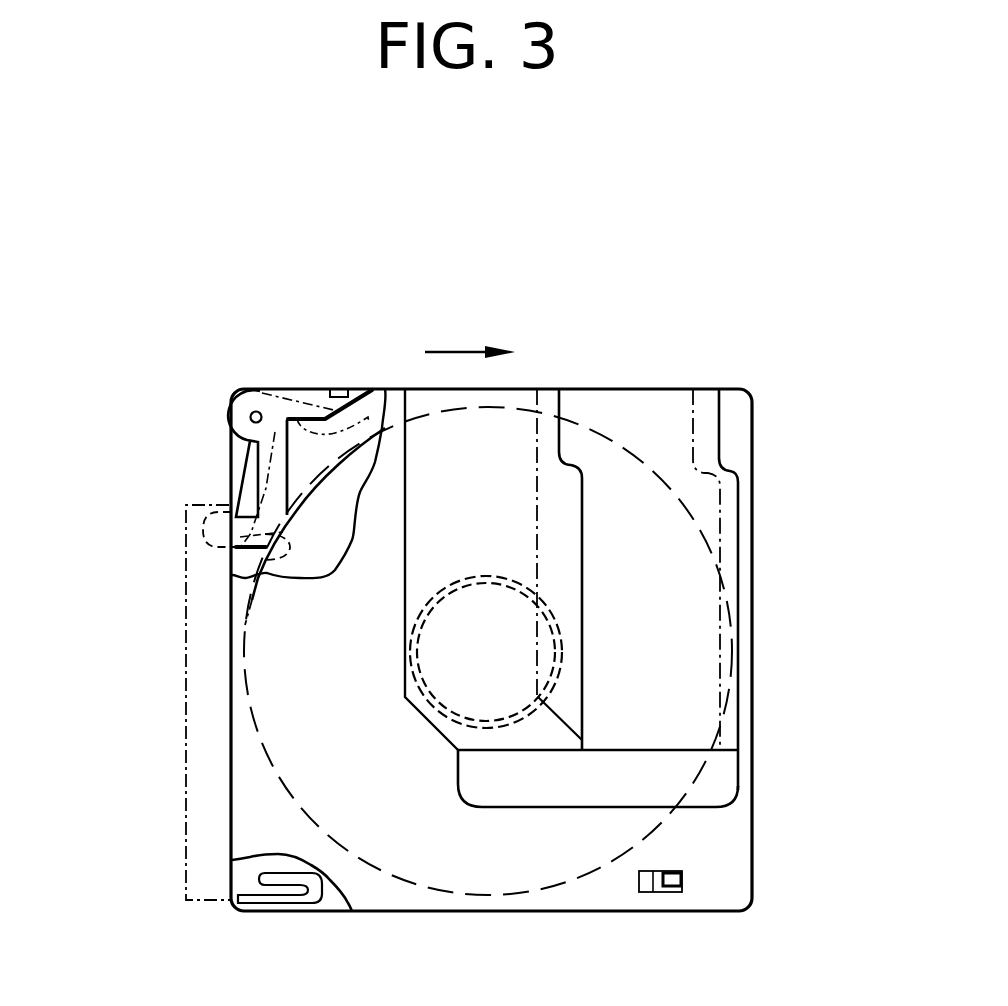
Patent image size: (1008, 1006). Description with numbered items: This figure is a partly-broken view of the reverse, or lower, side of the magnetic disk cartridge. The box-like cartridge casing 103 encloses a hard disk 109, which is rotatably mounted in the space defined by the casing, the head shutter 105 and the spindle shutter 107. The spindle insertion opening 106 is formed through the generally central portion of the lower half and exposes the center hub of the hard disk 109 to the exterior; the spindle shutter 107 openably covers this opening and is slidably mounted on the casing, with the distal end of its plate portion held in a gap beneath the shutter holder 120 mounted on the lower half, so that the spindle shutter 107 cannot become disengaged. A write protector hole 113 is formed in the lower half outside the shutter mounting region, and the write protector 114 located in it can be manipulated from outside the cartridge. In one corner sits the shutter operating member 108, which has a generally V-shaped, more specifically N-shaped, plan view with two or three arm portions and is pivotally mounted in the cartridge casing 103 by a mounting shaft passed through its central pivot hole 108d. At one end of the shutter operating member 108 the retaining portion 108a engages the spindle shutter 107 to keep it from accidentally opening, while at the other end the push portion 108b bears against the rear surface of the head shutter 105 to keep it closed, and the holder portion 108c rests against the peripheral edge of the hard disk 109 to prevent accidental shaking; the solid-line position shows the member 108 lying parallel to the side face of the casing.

The cartridge casing 103 is at (748, 407).
The head shutter 105 is at (193, 503).
The spindle insertion opening 106 is at (483, 728).
The spindle shutter 107 is at (525, 388).
The shutter operating member 108 is at (307, 388).
The retaining portion 108a is at (340, 389).
The push portion 108b is at (203, 525).
The holder portion 108c is at (265, 561).
The pivot hole 108d is at (254, 411).
The hard disk 109 is at (380, 877).
The write protector hole 113 is at (682, 880).
The write protector 114 is at (651, 890).
The shutter holder 120 is at (722, 780).